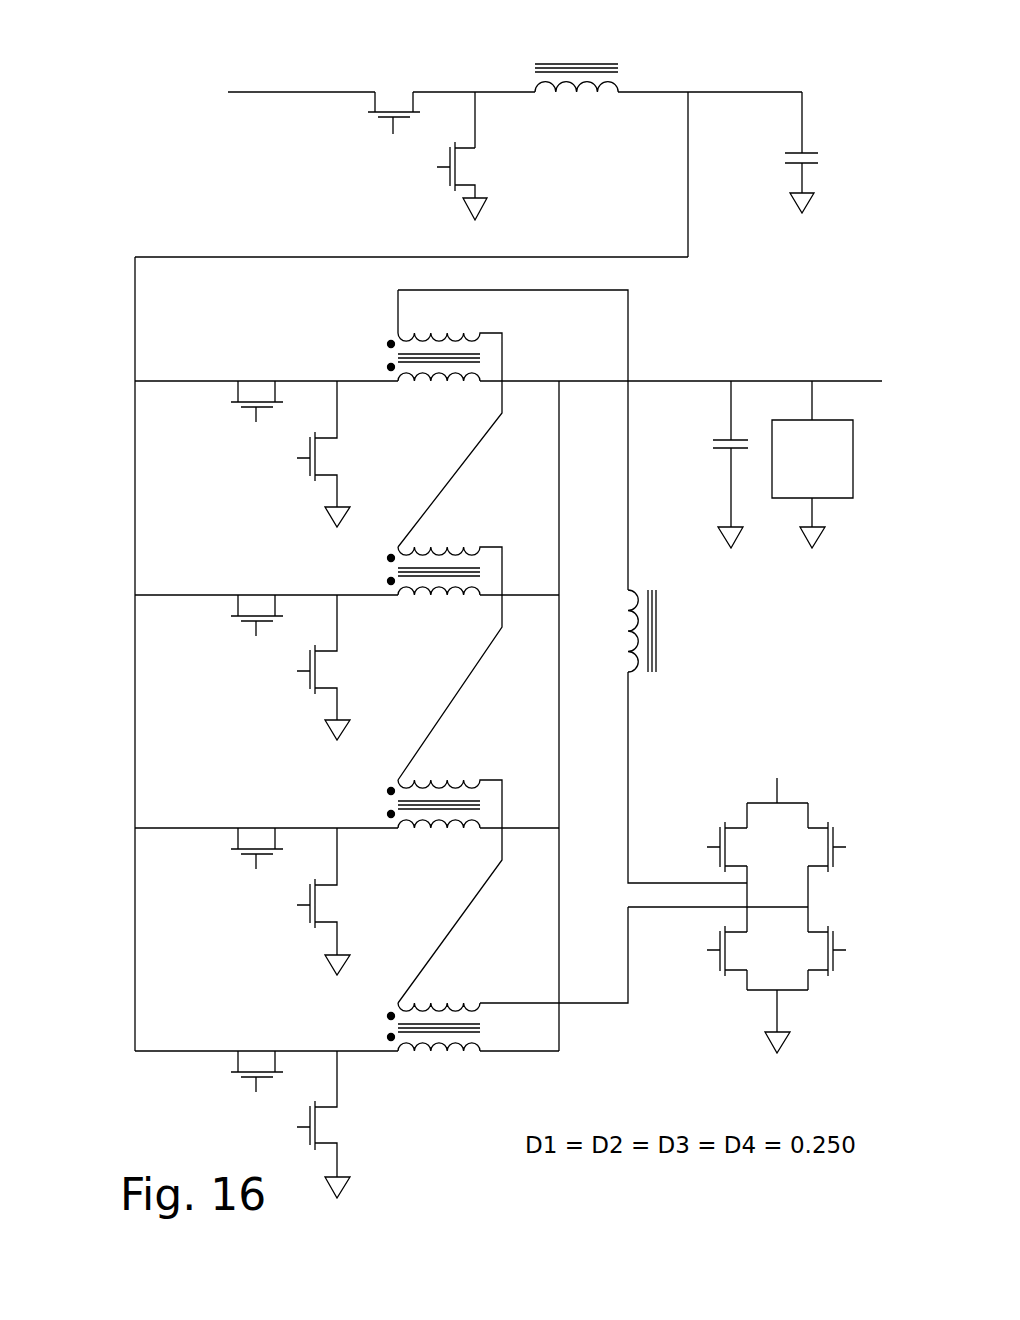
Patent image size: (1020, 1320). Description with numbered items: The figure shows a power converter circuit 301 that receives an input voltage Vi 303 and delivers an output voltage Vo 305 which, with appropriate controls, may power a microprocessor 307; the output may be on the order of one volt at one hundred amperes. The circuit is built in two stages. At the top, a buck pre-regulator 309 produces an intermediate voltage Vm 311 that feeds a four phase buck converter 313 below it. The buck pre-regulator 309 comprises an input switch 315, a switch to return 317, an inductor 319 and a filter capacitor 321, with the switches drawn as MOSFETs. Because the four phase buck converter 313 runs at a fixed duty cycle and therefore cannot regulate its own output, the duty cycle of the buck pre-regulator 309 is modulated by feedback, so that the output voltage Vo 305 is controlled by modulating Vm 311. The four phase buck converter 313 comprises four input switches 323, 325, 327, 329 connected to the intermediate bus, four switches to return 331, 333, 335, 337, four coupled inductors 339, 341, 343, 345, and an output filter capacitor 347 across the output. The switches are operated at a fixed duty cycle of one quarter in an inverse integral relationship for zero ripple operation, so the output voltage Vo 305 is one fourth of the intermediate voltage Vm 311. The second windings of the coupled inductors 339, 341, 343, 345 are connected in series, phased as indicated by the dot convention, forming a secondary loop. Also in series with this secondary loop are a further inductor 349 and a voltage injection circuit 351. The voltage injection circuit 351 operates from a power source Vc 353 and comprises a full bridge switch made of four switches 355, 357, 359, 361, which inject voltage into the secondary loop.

The power converter circuit 301 is at (166, 10).
The input voltage Vi 303 is at (228, 112).
The output voltage Vo 305 is at (805, 360).
The microprocessor 307 is at (870, 468).
The buck pre-regulator 309 is at (325, 62).
The intermediate voltage Vm 311 is at (186, 242).
The four phase buck converter 313 is at (213, 292).
The input switch Q1 315 is at (393, 76).
The switch to return Q2 317 is at (487, 148).
The inductor L1 319 is at (630, 75).
The filter capacitor C1 321 is at (825, 138).
The input switch Q3 323 is at (235, 367).
The input switch Q4 325 is at (253, 578).
The input switch Q5 327 is at (253, 820).
The input switch Q6 329 is at (210, 1072).
The switch to return Q7 331 is at (283, 472).
The switch to return Q8 333 is at (285, 688).
The switch to return Q9 335 is at (297, 935).
The switch to return Q10 337 is at (350, 1140).
The coupled inductor T1 339 is at (357, 345).
The coupled inductor T2 341 is at (453, 540).
The coupled inductor T3 343 is at (453, 775).
The coupled inductor T4 345 is at (477, 1055).
The output filter capacitor C2 347 is at (700, 413).
The inductor L2 349 is at (663, 620).
The voltage injection circuit 351 is at (775, 712).
The power source Vc 353 is at (793, 780).
The switch Q11 355 is at (705, 817).
The switch Q12 357 is at (733, 987).
The switch Q13 359 is at (833, 865).
The switch Q14 361 is at (835, 965).